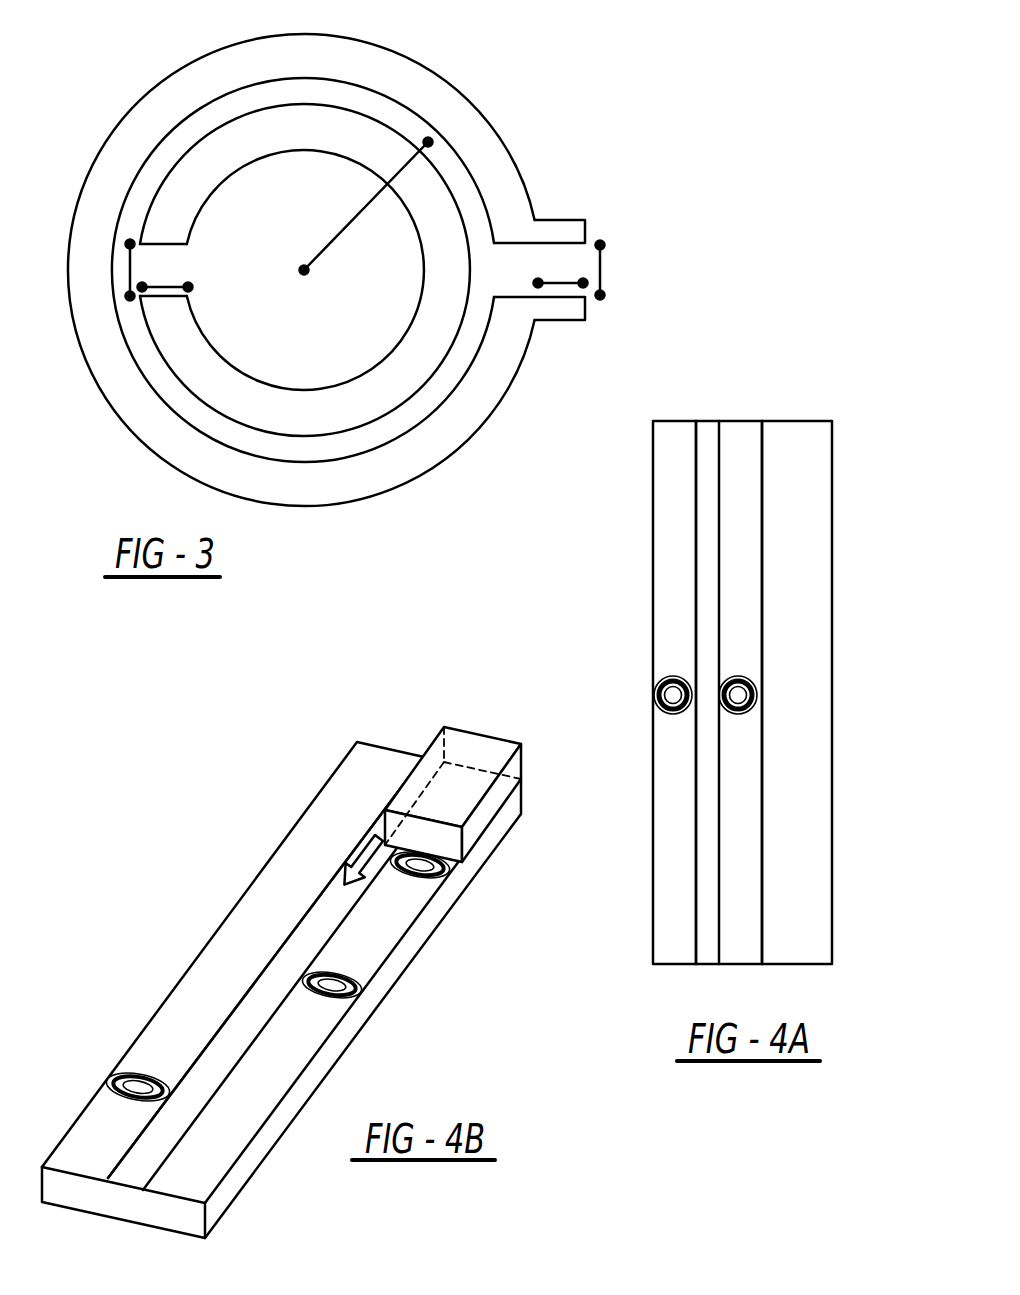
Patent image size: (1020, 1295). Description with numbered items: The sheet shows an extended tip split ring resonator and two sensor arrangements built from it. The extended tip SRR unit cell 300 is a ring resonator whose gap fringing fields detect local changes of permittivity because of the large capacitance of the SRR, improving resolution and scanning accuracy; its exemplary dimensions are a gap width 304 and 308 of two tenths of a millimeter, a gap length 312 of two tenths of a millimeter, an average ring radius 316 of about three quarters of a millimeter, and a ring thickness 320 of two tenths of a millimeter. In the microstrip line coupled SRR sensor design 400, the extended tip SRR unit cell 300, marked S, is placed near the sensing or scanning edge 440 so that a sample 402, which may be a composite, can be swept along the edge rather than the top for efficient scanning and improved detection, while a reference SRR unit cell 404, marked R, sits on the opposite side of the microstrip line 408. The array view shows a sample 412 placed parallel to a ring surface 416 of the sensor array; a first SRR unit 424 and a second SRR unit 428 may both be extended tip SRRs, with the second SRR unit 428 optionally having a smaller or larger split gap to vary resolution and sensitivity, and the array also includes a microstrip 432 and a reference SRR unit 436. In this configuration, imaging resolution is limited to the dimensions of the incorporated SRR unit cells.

In FIG. 3, the extended tip SRR unit cell 300 is at (108, 106).
In FIG. 4A, the extended tip SRR unit cell 300 is at (755, 667).
In FIG. 3, the gap width 304 is at (600, 257).
In FIG. 3, the gap width 308 is at (130, 270).
In FIG. 3, the gap length 312 is at (555, 283).
In FIG. 3, the average ring radius 316 is at (360, 212).
In FIG. 3, the ring thickness 320 is at (165, 287).
In FIG. 4A, the SRR sensor design 400 is at (725, 632).
In FIG. 4A, the sample 402 is at (790, 472).
In FIG. 4A, the reference SRR unit cell 404 is at (642, 688).
In FIG. 4A, the microstrip line 408 is at (702, 818).
In FIG. 4B, the sample 412 is at (444, 727).
In FIG. 4B, the ring surface 416 is at (215, 1133).
In FIG. 4B, the first SRR unit 424 is at (360, 977).
In FIG. 4B, the second SRR unit 428 is at (427, 880).
In FIG. 4B, the microstrip 432 is at (237, 1025).
In FIG. 4B, the reference SRR unit 436 is at (137, 1073).
In FIG. 4A, the sensing or scanning edge 440 is at (762, 806).
In FIG. 4B, the sensing or scanning edge 440 is at (340, 1047).